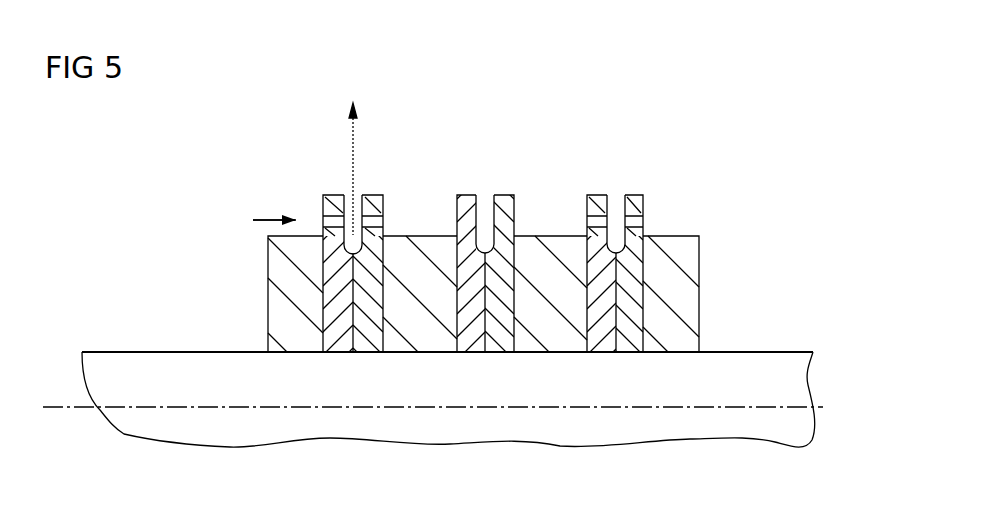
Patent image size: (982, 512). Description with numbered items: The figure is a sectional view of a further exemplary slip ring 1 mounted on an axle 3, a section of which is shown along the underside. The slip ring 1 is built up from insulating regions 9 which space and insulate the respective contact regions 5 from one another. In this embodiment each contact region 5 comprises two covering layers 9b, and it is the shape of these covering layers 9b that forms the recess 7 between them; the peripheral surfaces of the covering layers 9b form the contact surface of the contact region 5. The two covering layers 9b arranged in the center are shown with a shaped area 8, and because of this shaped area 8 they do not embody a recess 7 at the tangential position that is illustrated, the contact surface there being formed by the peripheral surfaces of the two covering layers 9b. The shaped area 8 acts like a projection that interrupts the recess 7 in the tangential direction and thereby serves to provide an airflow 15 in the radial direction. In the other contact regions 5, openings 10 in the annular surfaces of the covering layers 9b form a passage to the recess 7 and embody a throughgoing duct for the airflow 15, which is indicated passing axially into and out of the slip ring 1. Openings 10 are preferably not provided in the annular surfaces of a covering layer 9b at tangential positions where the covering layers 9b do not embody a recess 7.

The slip ring 1 is at (697, 144).
The axle 3 is at (59, 406).
The contact region 5 is at (478, 170).
The recess 7 is at (361, 194).
The shaped area 8 is at (485, 197).
The insulating region 9 is at (280, 312).
The covering layer 9b is at (330, 187).
The opening 10 is at (637, 221).
The airflow 15 is at (353, 139).